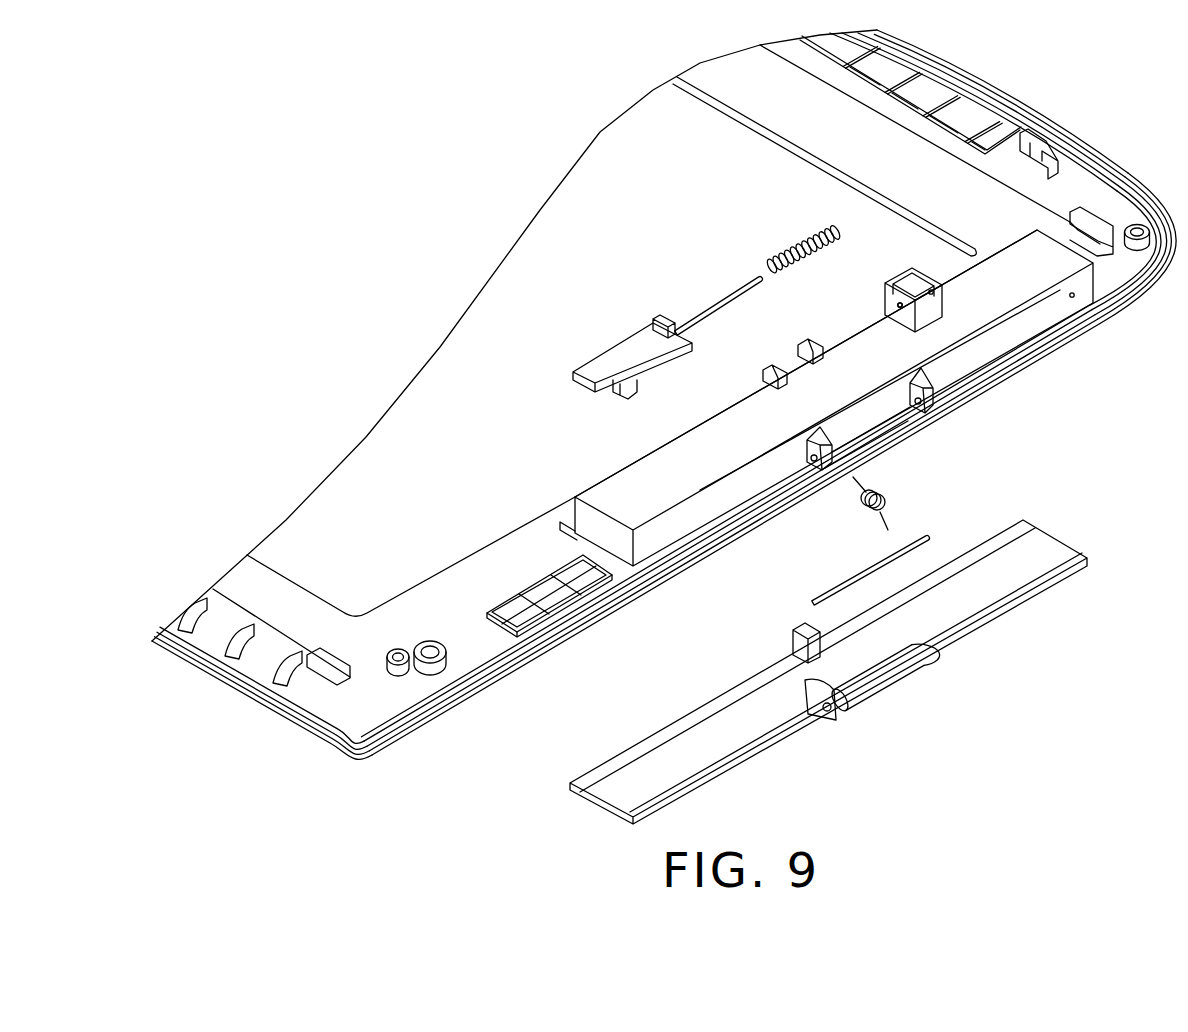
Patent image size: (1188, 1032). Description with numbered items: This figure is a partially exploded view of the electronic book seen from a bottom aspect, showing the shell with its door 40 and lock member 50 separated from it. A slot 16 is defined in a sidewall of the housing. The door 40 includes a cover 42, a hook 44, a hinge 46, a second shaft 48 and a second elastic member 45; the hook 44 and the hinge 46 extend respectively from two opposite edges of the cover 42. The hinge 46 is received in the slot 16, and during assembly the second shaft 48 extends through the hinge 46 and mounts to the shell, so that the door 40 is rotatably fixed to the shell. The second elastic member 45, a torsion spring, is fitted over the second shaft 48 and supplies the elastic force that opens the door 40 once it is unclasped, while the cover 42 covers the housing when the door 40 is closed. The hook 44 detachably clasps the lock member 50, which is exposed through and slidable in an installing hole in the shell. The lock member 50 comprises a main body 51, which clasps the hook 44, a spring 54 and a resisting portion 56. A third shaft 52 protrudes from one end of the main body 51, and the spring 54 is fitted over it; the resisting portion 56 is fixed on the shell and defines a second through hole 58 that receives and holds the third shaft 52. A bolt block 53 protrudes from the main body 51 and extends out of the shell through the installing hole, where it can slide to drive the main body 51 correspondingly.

The slot 16 is at (883, 405).
The door 40 is at (1104, 612).
The cover 42 is at (1017, 576).
The hook 44 is at (815, 652).
The second elastic member 45 is at (880, 524).
The hinge 46 is at (850, 702).
The second shaft 48 is at (925, 545).
The lock member 50 is at (355, 117).
The main body 51 is at (643, 347).
The third shaft 52 is at (703, 307).
The bolt block 53 is at (628, 376).
The spring 54 is at (770, 258).
The resisting portion 56 is at (907, 282).
The second through hole 58 is at (930, 305).